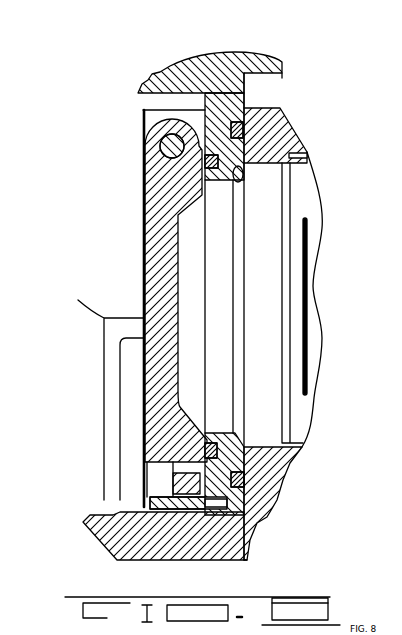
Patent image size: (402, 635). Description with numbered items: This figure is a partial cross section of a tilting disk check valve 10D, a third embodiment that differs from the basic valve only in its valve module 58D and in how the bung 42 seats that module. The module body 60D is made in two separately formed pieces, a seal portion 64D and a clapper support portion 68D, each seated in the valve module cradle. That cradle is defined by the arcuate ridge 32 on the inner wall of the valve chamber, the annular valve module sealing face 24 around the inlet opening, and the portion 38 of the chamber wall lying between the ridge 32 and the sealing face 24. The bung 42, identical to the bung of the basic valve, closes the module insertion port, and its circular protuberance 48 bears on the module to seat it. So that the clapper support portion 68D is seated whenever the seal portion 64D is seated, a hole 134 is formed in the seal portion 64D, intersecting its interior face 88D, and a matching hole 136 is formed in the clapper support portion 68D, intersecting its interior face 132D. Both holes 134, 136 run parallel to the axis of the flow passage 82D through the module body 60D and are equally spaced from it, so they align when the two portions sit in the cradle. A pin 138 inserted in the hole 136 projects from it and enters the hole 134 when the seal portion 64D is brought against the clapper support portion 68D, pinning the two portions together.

The bung 42 is at (200, 63).
The valve 10D is at (285, 53).
The circular protuberance 48 is at (244, 80).
The seal portion 64D is at (232, 103).
The valve module sealing face 24 is at (240, 178).
The valve module 58D is at (142, 232).
The flow passage 82D is at (214, 324).
The arcuate ridge 32 is at (130, 365).
The interior face 88D is at (205, 468).
The clapper support portion 68D is at (205, 473).
The module body 60D is at (168, 488).
The interior face 132D is at (244, 485).
The hole 134 is at (240, 512).
The hole 136 is at (147, 562).
The pin 138 is at (192, 512).
The portion of inner wall 38 is at (247, 556).